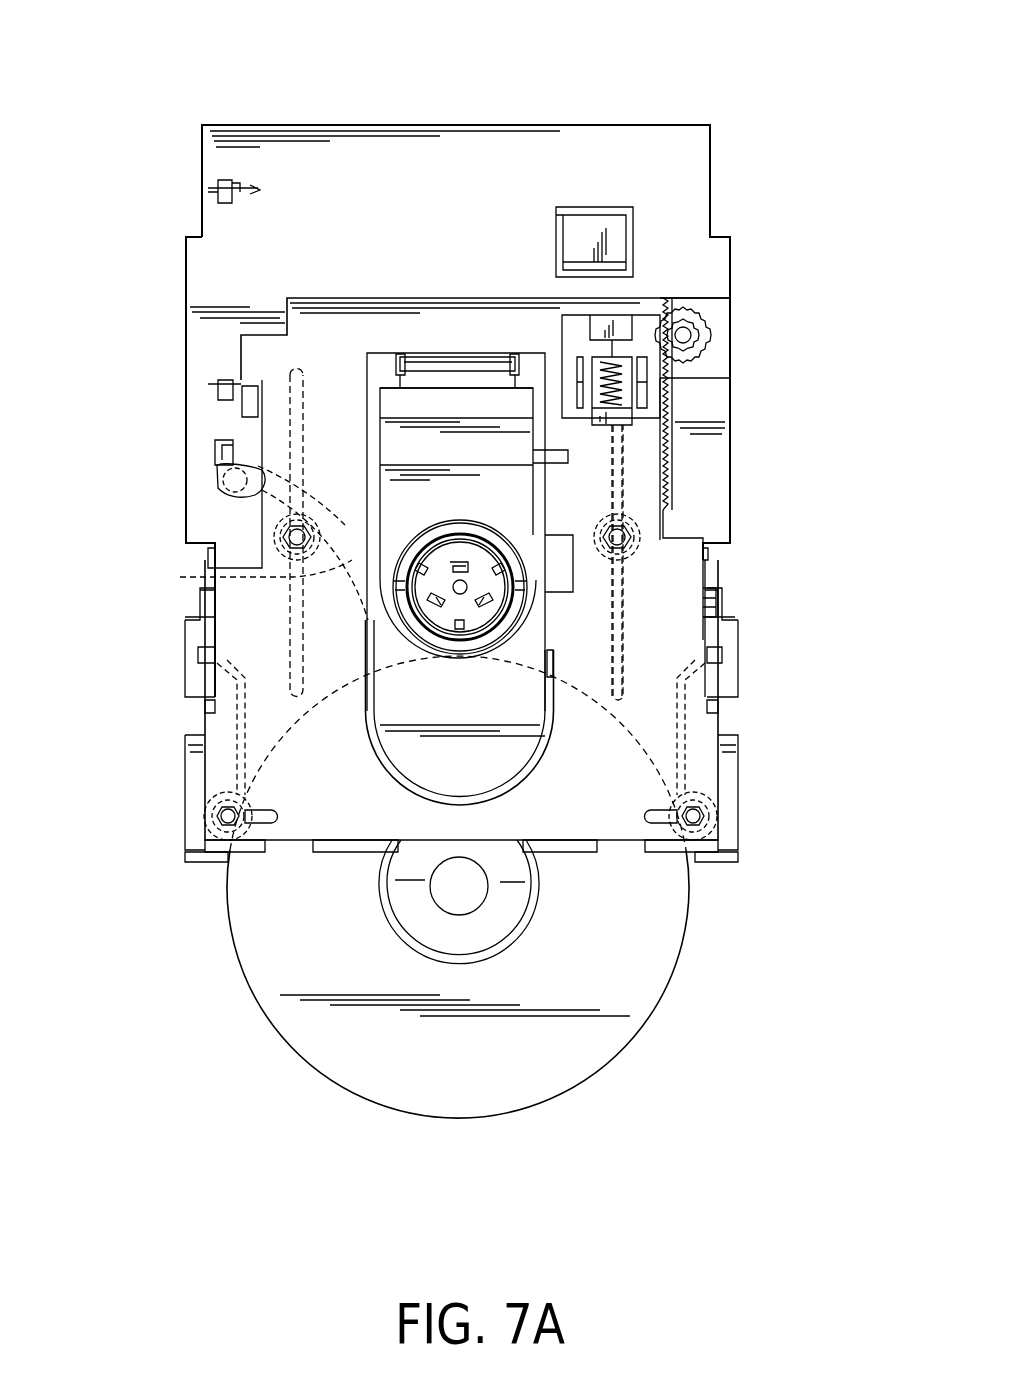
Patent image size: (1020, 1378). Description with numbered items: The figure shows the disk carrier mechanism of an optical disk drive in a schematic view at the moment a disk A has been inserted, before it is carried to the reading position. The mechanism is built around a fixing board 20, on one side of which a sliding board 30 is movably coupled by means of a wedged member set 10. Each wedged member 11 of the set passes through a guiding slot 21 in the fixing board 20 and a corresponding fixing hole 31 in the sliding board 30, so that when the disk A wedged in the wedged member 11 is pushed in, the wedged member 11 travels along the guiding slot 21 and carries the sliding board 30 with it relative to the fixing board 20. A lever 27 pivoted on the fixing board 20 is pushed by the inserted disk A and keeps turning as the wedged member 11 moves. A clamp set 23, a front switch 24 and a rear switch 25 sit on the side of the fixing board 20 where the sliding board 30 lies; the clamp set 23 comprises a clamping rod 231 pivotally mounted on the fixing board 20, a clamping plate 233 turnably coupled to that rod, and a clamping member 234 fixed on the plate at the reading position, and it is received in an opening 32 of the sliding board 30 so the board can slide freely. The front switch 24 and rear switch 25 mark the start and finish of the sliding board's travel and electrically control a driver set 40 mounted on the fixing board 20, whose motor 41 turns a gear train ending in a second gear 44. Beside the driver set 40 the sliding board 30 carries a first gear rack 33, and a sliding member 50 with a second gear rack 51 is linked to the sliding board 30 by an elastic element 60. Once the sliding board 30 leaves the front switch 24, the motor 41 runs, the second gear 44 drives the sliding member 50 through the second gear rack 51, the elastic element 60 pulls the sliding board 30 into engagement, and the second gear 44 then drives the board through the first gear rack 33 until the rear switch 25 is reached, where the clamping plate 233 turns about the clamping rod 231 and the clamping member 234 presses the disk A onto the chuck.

The wedged member set 10 is at (200, 787).
The wedged member 11 is at (215, 818).
The fixing board 20 is at (660, 122).
The guiding slot 21 is at (610, 484).
The clamp set 23 is at (525, 68).
The clamping rod 231 is at (477, 367).
The clamping plate 233 is at (440, 397).
The clamping member 234 is at (420, 545).
The front switch 24 is at (222, 392).
The rear switch 25 is at (215, 195).
The lever 27 is at (180, 577).
The sliding board 30 is at (277, 352).
The fixing hole 31 is at (655, 802).
The opening 32 is at (530, 645).
The first gear rack 33 is at (668, 455).
The driver set 40 is at (750, 313).
The motor 41 is at (588, 240).
The second gear 44 is at (702, 350).
The sliding member 50 is at (643, 325).
The second gear rack 51 is at (668, 394).
The elastic element 60 is at (612, 363).
The disk A is at (605, 1035).